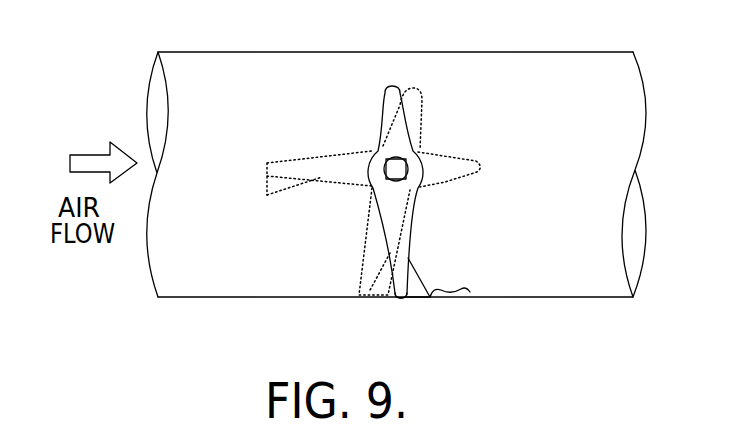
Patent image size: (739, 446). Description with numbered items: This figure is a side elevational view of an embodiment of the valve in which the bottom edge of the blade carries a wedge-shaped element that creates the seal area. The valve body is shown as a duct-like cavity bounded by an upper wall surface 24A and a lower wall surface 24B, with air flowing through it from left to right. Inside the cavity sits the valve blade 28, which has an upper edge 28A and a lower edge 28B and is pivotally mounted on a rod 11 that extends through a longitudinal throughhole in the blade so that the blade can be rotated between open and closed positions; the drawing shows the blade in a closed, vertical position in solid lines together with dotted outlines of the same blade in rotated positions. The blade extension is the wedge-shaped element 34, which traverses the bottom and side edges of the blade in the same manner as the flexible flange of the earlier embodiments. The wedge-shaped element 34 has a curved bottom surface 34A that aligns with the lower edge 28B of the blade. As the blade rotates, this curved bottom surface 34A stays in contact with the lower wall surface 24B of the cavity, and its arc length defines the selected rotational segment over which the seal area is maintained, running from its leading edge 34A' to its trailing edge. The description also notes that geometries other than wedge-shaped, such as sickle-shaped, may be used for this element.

The upper wall surface 24A is at (419, 52).
The lower wall surface 24B is at (311, 297).
The valve blade 28 is at (389, 230).
The upper edge 28A is at (388, 87).
The lower edge 28B is at (267, 163).
The rod 11 is at (388, 164).
The wedge-shaped element 34 is at (294, 192).
The curved bottom surface 34A is at (343, 257).
The leading edge 34A' is at (417, 326).